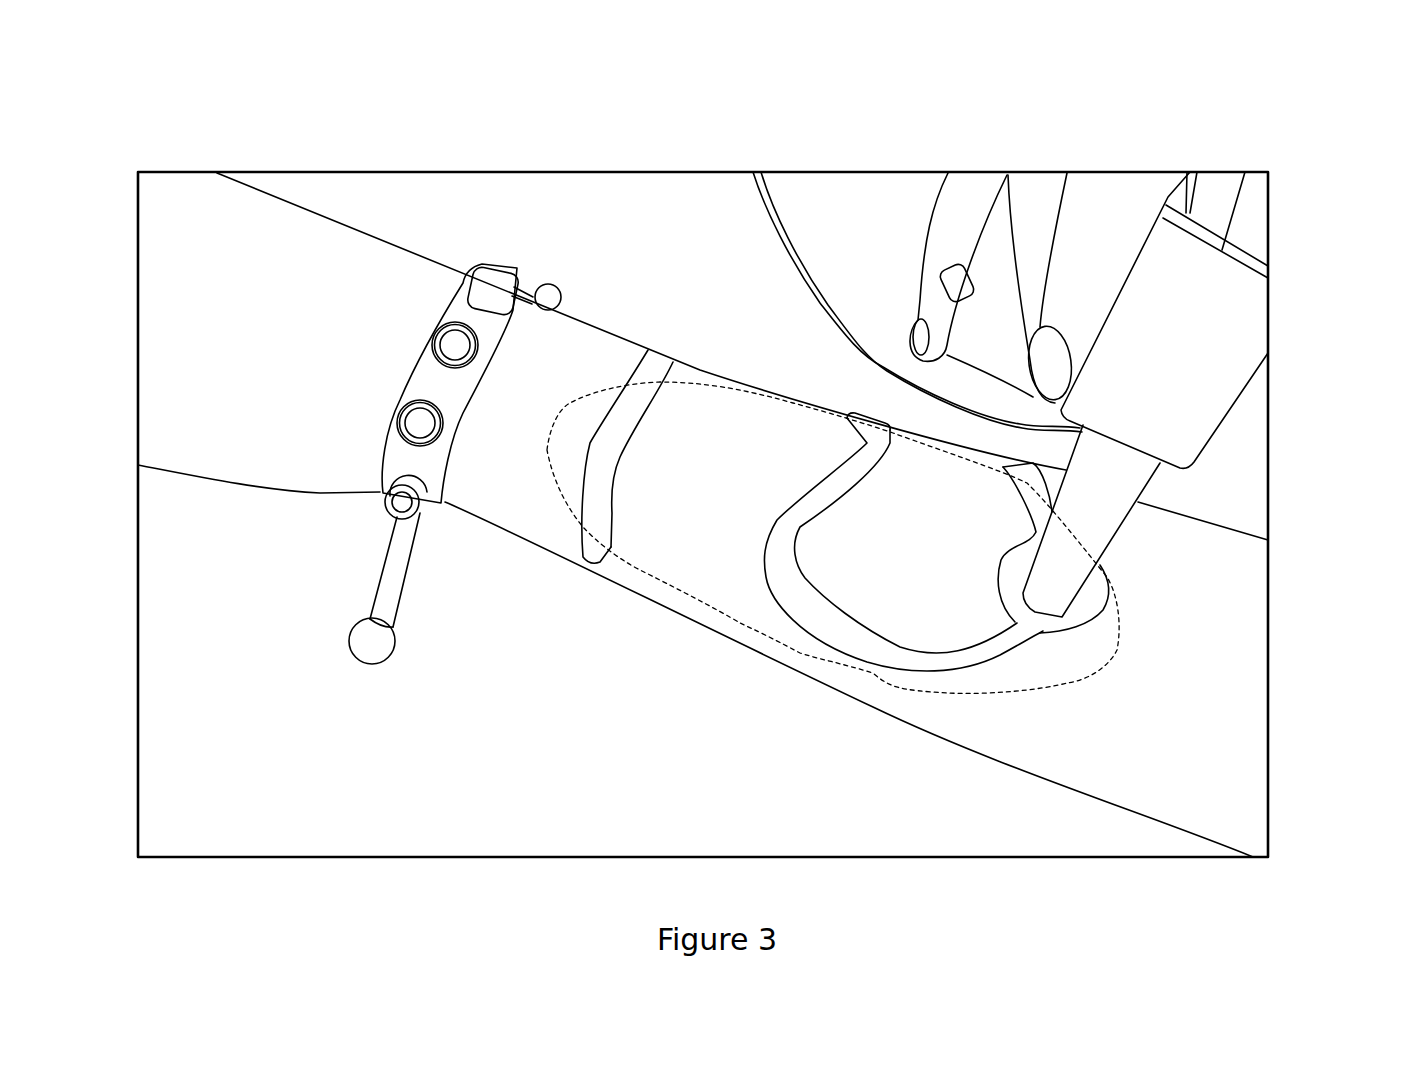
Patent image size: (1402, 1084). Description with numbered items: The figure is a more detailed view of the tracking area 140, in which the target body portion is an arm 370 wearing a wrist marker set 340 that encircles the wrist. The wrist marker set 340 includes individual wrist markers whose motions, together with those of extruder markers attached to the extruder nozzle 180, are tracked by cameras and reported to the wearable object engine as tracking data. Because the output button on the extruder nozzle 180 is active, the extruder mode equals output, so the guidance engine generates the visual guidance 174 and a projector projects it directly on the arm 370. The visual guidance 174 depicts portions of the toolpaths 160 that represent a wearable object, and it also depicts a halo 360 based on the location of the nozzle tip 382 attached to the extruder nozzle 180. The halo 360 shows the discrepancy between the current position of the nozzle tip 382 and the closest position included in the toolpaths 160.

The tracking area 140 is at (1246, 79).
The toolpaths 160 is at (633, 451).
The visual guidance 174 is at (722, 578).
The extruder nozzle 180 is at (1157, 317).
The wrist marker set 340 is at (392, 420).
The halo 360 is at (997, 570).
The arm 370 is at (640, 346).
The nozzle tip 382 is at (1095, 563).